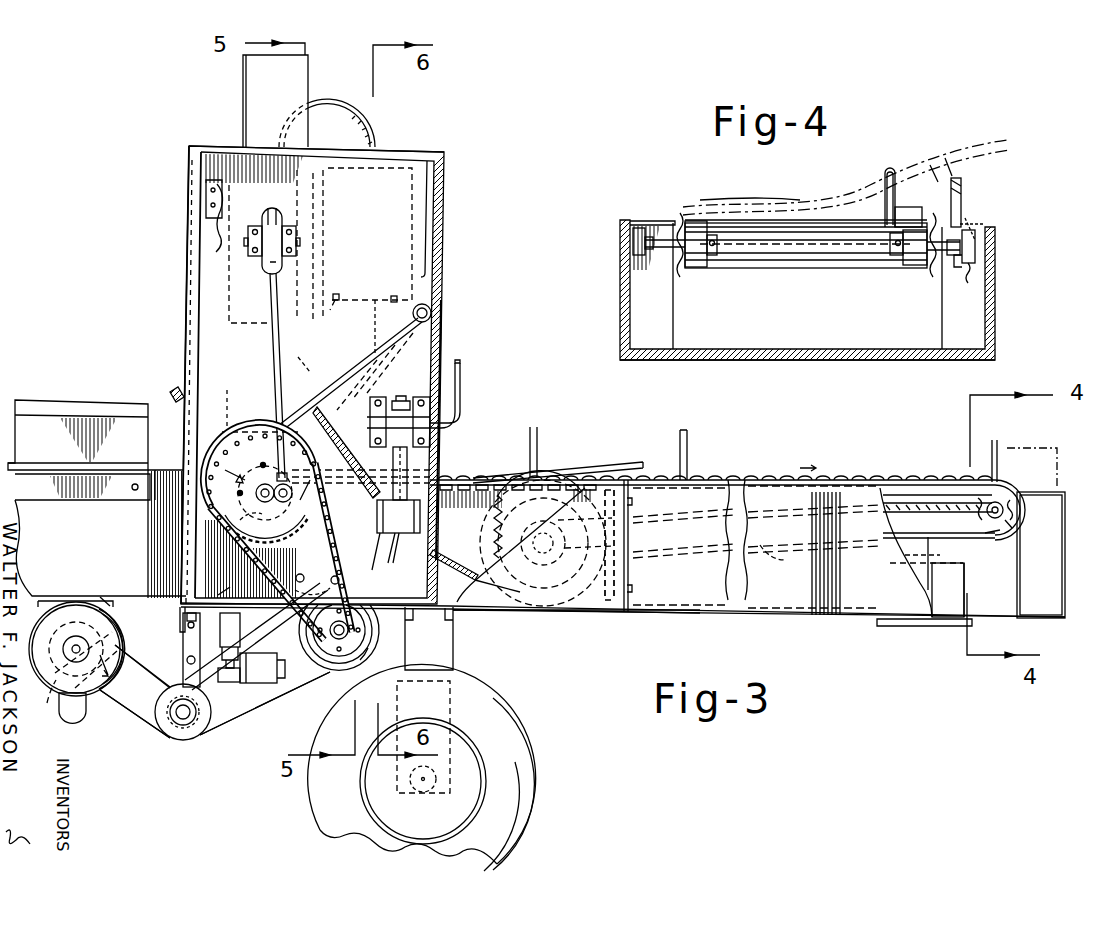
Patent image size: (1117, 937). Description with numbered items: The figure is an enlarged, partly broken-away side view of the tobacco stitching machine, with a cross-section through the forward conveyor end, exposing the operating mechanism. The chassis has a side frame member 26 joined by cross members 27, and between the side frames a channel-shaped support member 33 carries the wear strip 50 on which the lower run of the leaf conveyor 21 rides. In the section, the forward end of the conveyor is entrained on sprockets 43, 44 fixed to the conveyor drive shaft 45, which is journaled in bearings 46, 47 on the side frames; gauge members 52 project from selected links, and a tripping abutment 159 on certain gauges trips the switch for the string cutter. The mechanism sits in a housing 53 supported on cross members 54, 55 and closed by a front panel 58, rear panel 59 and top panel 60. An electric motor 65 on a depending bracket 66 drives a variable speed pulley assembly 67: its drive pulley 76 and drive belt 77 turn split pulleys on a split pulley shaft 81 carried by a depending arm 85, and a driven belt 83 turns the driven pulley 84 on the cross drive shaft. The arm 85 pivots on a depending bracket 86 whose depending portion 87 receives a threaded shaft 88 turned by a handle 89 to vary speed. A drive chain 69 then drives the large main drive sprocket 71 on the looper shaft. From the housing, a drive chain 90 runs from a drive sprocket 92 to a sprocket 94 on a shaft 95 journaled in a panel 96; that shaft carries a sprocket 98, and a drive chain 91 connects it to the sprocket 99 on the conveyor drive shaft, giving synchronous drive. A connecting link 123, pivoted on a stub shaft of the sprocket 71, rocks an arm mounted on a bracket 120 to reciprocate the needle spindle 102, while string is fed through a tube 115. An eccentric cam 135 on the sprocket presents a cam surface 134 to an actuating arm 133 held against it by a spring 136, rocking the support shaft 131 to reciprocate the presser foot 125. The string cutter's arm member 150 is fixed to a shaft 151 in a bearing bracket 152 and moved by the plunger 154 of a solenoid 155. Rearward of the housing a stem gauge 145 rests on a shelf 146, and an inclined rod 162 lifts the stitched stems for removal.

In FIG. 3, the leaf conveyor 21 is at (859, 474).
In FIG. 4, the leaf conveyor 21 is at (855, 277).
In FIG. 4, the side frame member 26 is at (616, 310).
In FIG. 3, the cross members 27 is at (920, 626).
In FIG. 4, the cross members 27 is at (997, 312).
In FIG. 3, the support member 33 is at (972, 585).
In FIG. 4, the sprocket 43 is at (698, 270).
In FIG. 4, the sprocket 44 is at (915, 272).
In FIG. 3, the conveyor drive shaft 45 is at (1006, 530).
In FIG. 4, the conveyor drive shaft 45 is at (823, 247).
In FIG. 4, the bearing 46 is at (630, 250).
In FIG. 4, the bearing 47 is at (985, 255).
In FIG. 3, the wear strip 50 is at (940, 550).
In FIG. 3, the gauge members 52 is at (688, 447).
In FIG. 4, the gauge members 52 is at (885, 173).
In FIG. 3, the housing 53 is at (448, 240).
In FIG. 3, the cross member 54 is at (182, 620).
In FIG. 3, the cross member 55 is at (452, 620).
In FIG. 3, the front panel 58 is at (440, 347).
In FIG. 3, the rear panel 59 is at (183, 330).
In FIG. 3, the top panel 60 is at (407, 153).
In FIG. 3, the electric motor 65 is at (110, 683).
In FIG. 3, the depending bracket 66 is at (110, 611).
In FIG. 3, the variable speed pulley assembly 67 is at (207, 743).
In FIG. 3, the drive chain 69 is at (286, 562).
In FIG. 3, the main drive sprocket 71 is at (283, 539).
In FIG. 3, the drive pulley 76 is at (47, 703).
In FIG. 3, the drive belt 77 is at (133, 713).
In FIG. 3, the split pulley shaft 81 is at (182, 725).
In FIG. 3, the driven belt 83 is at (237, 717).
In FIG. 3, the driven pulley 84 is at (380, 637).
In FIG. 3, the depending arm 85 is at (192, 668).
In FIG. 3, the depending bracket 86 is at (218, 584).
In FIG. 3, the depending portion 87 is at (238, 625).
In FIG. 3, the threaded shaft 88 is at (182, 653).
In FIG. 3, the handle 89 is at (253, 663).
In FIG. 3, the drive chain 90 is at (440, 557).
In FIG. 4, the drive chain 90 is at (970, 230).
In FIG. 3, the drive chain 91 is at (785, 560).
In FIG. 4, the drive chain 91 is at (968, 283).
In FIG. 3, the drive sprocket 92 is at (247, 523).
In FIG. 3, the sprocket 94 is at (497, 513).
In FIG. 3, the shaft 95 is at (546, 543).
In FIG. 3, the panel 96 is at (570, 604).
In FIG. 3, the sprocket 98 is at (628, 533).
In FIG. 3, the sprocket 99 is at (1004, 504).
In FIG. 3, the spindle 102 is at (282, 217).
In FIG. 3, the tube 115 is at (360, 115).
In FIG. 3, the bracket 120 is at (300, 244).
In FIG. 3, the connecting link 123 is at (270, 348).
In FIG. 3, the presser foot 125 is at (228, 401).
In FIG. 3, the support shaft 131 is at (431, 313).
In FIG. 3, the actuating arm 133 is at (385, 362).
In FIG. 3, the cam surface 134 is at (213, 503).
In FIG. 3, the eccentric cam 135 is at (248, 433).
In FIG. 3, the spring 136 is at (353, 457).
In FIG. 3, the stem gauge 145 is at (62, 402).
In FIG. 3, the shelf 146 is at (110, 490).
In FIG. 3, the arm member 150 is at (460, 405).
In FIG. 3, the shaft 151 is at (440, 432).
In FIG. 3, the bearing bracket 152 is at (421, 397).
In FIG. 3, the plunger 154 is at (403, 483).
In FIG. 3, the solenoid 155 is at (400, 535).
In FIG. 4, the tripping abutment 159 is at (917, 205).
In FIG. 3, the inclined rod 162 is at (617, 462).
In FIG. 4, the inclined rod 162 is at (963, 193).